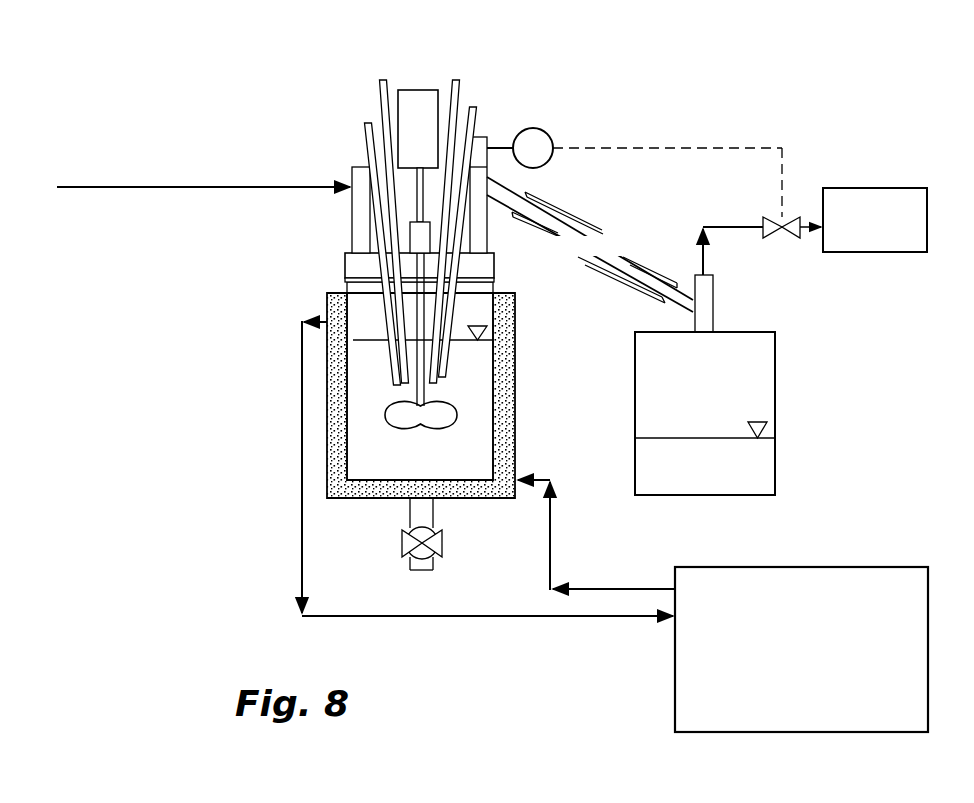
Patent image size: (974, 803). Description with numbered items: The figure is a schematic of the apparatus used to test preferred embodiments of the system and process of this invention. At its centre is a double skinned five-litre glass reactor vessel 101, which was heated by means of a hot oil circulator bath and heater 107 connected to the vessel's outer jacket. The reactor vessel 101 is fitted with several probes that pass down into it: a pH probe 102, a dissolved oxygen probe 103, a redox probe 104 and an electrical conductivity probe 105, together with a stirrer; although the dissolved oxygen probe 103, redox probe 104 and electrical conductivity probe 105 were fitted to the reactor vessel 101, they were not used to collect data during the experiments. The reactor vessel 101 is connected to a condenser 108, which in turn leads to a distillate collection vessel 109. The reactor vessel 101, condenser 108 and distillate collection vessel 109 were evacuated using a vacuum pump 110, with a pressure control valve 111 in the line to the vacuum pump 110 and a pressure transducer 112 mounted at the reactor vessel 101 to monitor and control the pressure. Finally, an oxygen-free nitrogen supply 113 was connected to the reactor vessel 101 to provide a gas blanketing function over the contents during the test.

The reactor vessel 101 is at (487, 413).
The pH probe 102 is at (477, 110).
The dissolved oxygen probe 103 is at (457, 80).
The redox probe 104 is at (365, 127).
The electrical conductivity probe 105 is at (380, 82).
The hot oil circulator bath and heater 107 is at (898, 565).
The condenser 108 is at (562, 208).
The distillate collection vessel 109 is at (777, 337).
The vacuum pump 110 is at (903, 188).
The pressure control valve 111 is at (765, 220).
The pressure transducer 112 is at (542, 135).
The oxygen-free nitrogen supply 113 is at (128, 186).